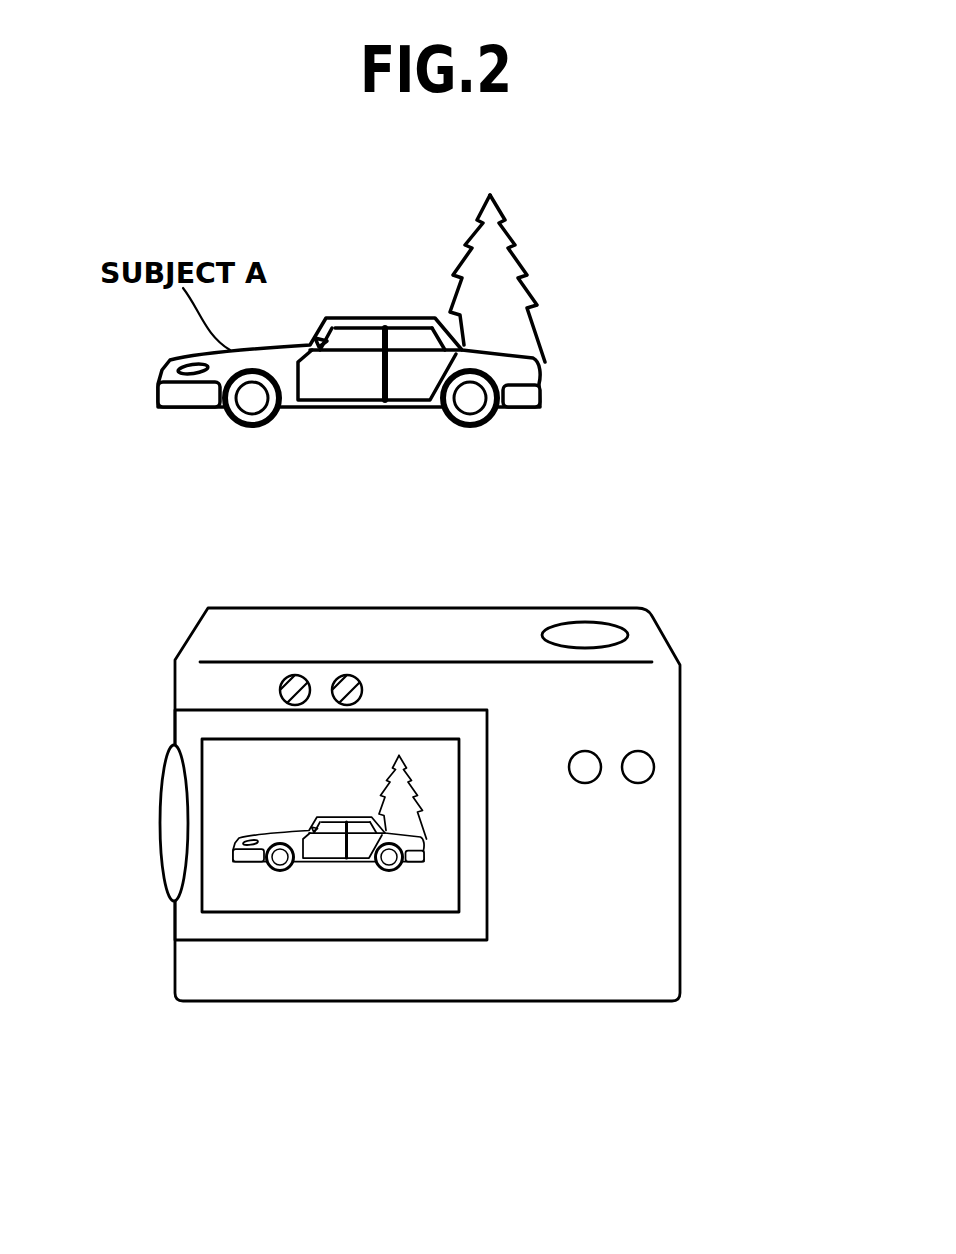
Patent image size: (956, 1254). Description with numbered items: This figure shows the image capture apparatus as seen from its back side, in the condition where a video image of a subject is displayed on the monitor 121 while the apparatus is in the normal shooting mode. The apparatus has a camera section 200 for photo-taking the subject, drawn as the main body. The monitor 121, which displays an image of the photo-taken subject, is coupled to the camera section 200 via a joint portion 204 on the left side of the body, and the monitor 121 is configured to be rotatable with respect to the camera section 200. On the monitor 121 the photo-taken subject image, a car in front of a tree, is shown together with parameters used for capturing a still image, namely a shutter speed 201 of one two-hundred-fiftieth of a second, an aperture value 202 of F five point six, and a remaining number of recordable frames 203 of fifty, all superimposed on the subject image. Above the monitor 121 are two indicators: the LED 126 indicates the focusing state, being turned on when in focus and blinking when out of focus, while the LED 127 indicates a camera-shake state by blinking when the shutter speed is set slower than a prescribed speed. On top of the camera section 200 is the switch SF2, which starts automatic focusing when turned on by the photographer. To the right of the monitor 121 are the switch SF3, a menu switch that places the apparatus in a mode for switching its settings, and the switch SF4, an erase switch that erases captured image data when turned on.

The camera section 200 is at (598, 967).
The monitor 121 is at (232, 788).
The shutter speed 201 is at (245, 903).
The aperture value 202 is at (337, 903).
The remaining number of recordable frames 203 is at (430, 903).
The joint portion 204 is at (170, 829).
The LED 126 is at (293, 675).
The LED 127 is at (348, 675).
The switch SF2 is at (590, 628).
The menu switch SF3 is at (590, 768).
The erase switch SF4 is at (642, 768).